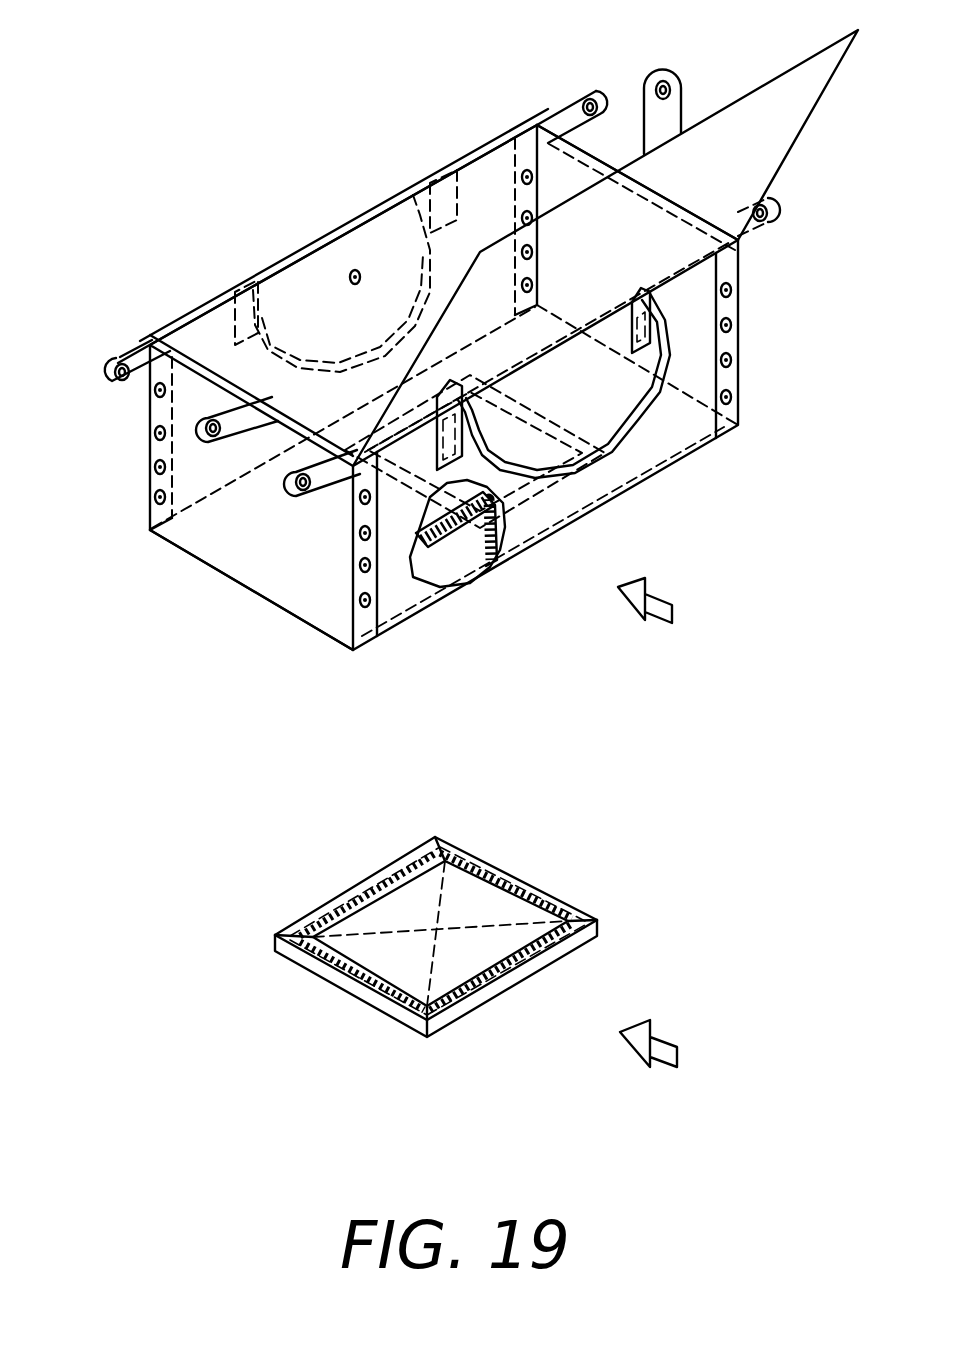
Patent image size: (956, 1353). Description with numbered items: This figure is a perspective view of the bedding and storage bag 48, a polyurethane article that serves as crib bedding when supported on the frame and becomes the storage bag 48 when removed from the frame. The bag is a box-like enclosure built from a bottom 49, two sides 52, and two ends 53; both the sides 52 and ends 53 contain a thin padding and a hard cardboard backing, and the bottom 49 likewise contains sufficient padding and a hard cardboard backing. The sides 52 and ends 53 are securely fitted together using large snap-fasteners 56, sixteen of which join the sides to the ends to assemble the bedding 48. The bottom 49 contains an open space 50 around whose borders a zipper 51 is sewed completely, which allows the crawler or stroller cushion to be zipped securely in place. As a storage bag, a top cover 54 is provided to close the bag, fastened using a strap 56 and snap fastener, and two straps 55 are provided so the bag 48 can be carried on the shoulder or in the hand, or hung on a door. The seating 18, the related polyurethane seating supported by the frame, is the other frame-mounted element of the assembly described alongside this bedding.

The bottom 49 is at (374, 400).
The open space 50 is at (442, 326).
The zipper 51 is at (390, 417).
The sides 52 is at (461, 336).
The ends 53 is at (444, 387).
The top cover 54 is at (807, 98).
The straps 55 is at (244, 318).
The snap-fasteners 56 is at (672, 97).
The bedding 48 is at (680, 633).
The seating 18 is at (680, 1073).